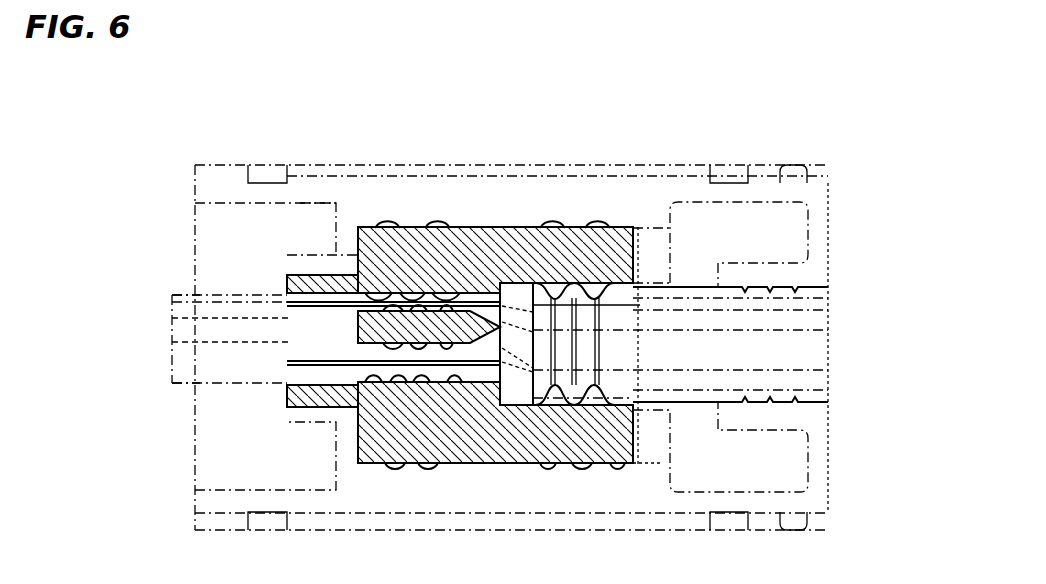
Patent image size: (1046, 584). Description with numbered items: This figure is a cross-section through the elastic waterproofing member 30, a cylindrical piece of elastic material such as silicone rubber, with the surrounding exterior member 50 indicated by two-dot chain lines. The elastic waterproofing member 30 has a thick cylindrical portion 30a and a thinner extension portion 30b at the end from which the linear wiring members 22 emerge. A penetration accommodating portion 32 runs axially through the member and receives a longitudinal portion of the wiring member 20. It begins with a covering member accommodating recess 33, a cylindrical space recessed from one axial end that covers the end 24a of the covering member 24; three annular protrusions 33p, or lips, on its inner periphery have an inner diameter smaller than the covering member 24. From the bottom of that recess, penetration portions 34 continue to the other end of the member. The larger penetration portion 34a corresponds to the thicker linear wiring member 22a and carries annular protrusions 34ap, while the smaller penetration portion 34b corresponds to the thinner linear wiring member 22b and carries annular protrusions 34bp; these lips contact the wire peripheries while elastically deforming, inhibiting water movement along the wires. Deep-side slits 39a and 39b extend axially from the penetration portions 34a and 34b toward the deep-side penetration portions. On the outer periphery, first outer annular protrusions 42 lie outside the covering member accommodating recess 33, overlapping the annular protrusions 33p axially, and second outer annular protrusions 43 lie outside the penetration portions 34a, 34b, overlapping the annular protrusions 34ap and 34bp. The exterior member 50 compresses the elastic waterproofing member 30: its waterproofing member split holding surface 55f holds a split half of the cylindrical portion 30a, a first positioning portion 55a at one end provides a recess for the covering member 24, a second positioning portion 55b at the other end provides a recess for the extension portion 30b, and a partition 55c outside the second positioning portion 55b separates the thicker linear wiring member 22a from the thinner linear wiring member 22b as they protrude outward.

The exterior member 50 is at (646, 162).
The wiring member 20 is at (811, 288).
The covering member 24 is at (805, 403).
The linear wiring members 22 is at (173, 383).
The thicker linear wiring member 22a is at (166, 419).
The thinner linear wiring member 22b is at (166, 260).
The elastic waterproofing member 30 is at (366, 227).
The penetration portion 34b is at (352, 212).
The annular protrusions 34bp is at (427, 296).
The first outer annular protrusions 42 is at (597, 226).
The cylindrical portion 30a is at (481, 226).
The waterproofing member split holding surface 55f is at (506, 226).
The end of the covering member 24a is at (617, 226).
The second positioning portion 55b is at (320, 255).
The extension portion 30b is at (298, 275).
The penetration accommodating portion 32 is at (533, 283).
The partition 55c is at (252, 322).
The deep-side slit 39b is at (287, 318).
The deep-side slit 39a is at (287, 353).
The penetration portions 34 is at (298, 372).
The penetration portion 34a is at (371, 423).
The annular protrusions 34ap is at (468, 378).
The annular protrusions 33p is at (590, 382).
The second outer annular protrusions 43 is at (432, 467).
The covering member accommodating recess 33 is at (626, 465).
The first positioning portion 55a is at (650, 468).